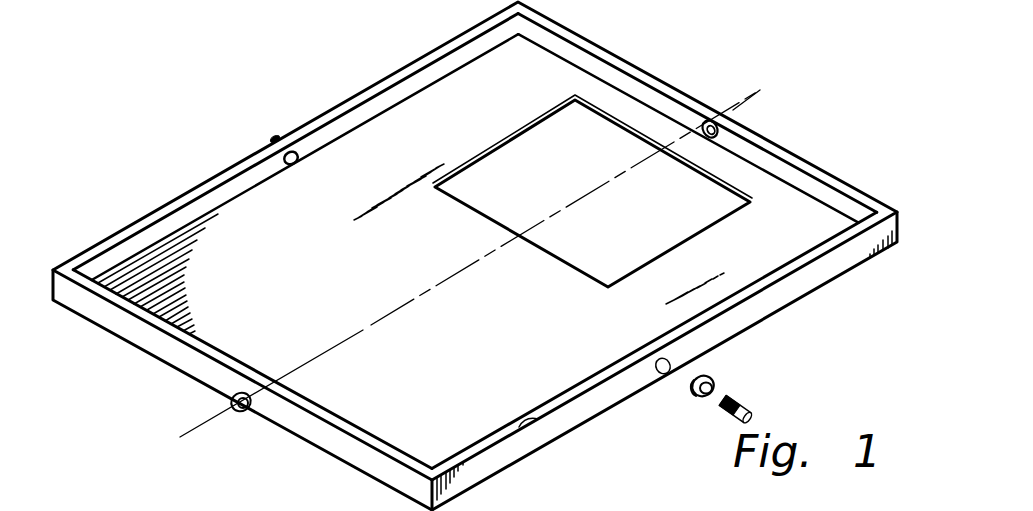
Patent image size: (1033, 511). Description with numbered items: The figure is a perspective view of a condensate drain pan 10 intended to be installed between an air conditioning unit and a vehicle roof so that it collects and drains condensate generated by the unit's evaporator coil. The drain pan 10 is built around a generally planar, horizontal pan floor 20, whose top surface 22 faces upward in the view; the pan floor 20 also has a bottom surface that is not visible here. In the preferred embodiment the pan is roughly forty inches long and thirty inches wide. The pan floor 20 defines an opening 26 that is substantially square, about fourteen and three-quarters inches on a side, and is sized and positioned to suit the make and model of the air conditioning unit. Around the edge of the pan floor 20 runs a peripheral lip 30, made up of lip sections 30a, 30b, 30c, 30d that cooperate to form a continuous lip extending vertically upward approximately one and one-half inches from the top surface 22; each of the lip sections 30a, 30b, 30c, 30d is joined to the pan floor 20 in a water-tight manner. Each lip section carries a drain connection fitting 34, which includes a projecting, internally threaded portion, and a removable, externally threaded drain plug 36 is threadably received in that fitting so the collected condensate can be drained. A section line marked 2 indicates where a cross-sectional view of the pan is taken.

The section line 2- 2 is at (760, 90).
The condensate drain pan 10 is at (263, 88).
The pan floor 20 is at (270, 238).
The top surface 22 is at (468, 375).
The opening 26 is at (683, 226).
The peripheral lip 30 is at (782, 298).
The lip section 30a is at (795, 157).
The lip section 30b is at (520, 422).
The lip section 30c is at (347, 437).
The lip section 30d is at (148, 217).
The drain connection fitting 34 is at (717, 367).
The drain plug 36 is at (718, 405).